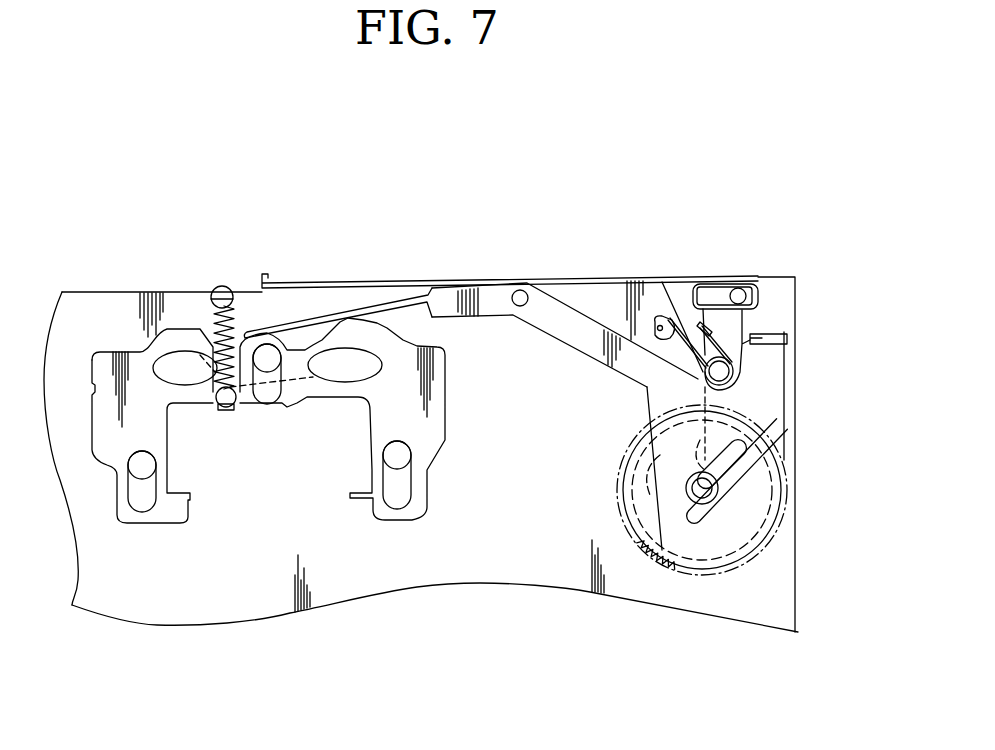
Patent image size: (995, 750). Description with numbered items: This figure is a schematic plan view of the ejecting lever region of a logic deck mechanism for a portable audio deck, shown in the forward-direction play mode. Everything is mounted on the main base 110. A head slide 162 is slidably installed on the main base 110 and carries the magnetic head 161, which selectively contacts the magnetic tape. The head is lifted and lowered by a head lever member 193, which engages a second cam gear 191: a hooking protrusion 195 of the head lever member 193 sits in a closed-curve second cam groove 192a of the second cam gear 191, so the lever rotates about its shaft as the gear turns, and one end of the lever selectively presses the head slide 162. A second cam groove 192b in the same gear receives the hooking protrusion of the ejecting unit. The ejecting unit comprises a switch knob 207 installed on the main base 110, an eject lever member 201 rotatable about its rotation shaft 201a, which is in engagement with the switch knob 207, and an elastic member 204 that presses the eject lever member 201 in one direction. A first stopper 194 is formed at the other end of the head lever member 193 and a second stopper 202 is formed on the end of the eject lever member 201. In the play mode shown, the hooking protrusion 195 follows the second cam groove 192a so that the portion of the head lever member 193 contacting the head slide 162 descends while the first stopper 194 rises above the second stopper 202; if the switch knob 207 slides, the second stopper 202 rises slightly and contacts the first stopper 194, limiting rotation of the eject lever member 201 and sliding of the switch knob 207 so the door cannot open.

The main base 110 is at (237, 585).
The magnetic head 161 is at (320, 335).
The head slide 162 is at (430, 415).
The second cam gear 191 is at (732, 576).
The second cam groove 192a is at (760, 477).
The second cam groove 192b is at (778, 525).
The head lever member 193 is at (562, 327).
The first stopper 194 is at (768, 328).
The hooking protrusion 195 is at (662, 550).
The eject lever member 201 is at (753, 323).
The rotation shaft 201a is at (745, 373).
The second stopper 202 is at (783, 344).
The elastic member 204 is at (680, 320).
The switch knob 207 is at (557, 278).